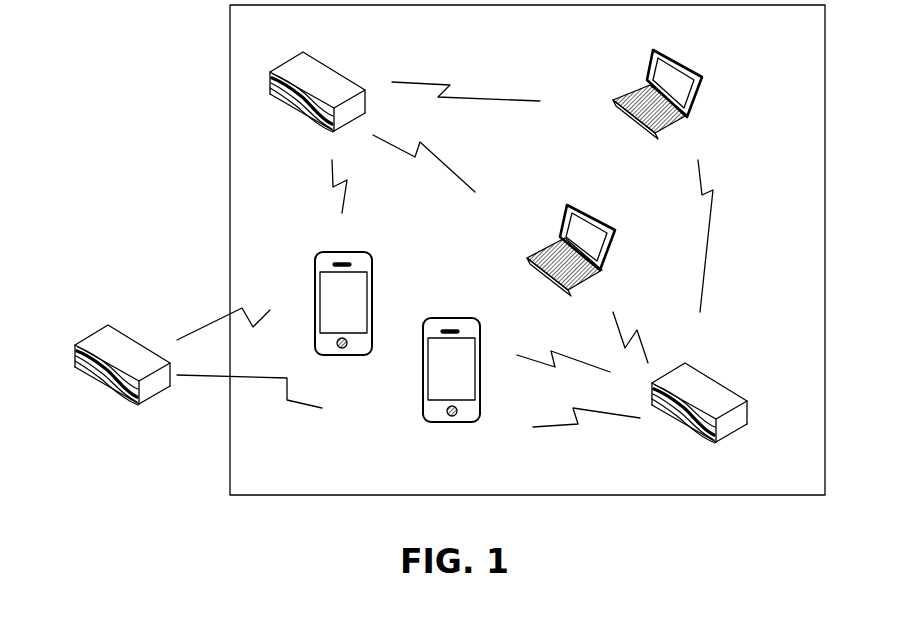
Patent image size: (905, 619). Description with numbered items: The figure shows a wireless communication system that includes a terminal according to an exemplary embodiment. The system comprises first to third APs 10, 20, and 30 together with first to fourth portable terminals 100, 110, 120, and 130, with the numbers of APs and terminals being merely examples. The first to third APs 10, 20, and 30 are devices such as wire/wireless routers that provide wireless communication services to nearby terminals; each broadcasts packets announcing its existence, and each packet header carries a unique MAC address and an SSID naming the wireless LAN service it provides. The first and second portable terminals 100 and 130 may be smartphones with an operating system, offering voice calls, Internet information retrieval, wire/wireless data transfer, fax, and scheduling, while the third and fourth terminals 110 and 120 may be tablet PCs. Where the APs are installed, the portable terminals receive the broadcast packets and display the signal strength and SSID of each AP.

The first AP 10 is at (320, 86).
The second AP 20 is at (123, 356).
The third AP 30 is at (700, 395).
The first portable terminal 100 is at (467, 392).
The third portable terminal 110 is at (670, 85).
The fourth portable terminal 120 is at (585, 241).
The second portable terminal 130 is at (362, 292).